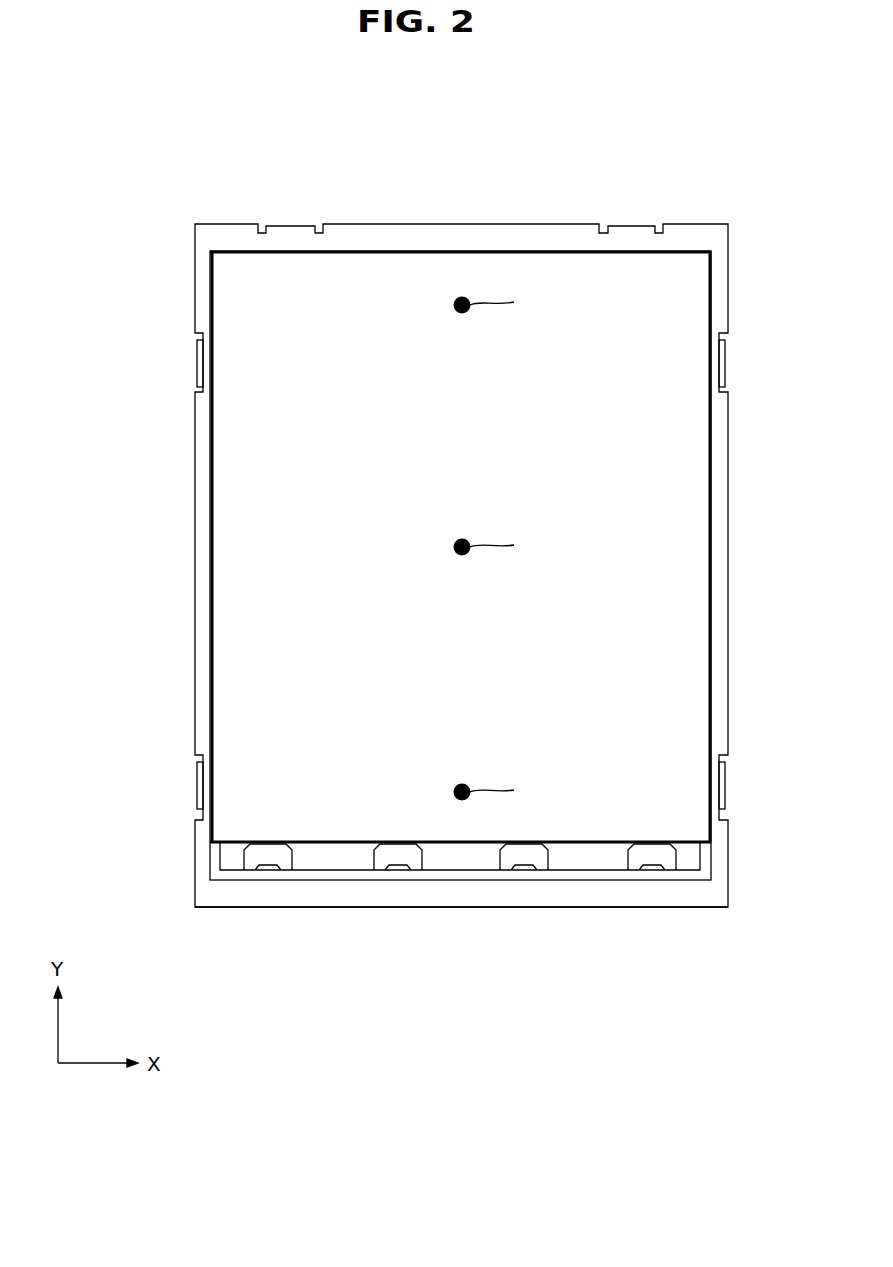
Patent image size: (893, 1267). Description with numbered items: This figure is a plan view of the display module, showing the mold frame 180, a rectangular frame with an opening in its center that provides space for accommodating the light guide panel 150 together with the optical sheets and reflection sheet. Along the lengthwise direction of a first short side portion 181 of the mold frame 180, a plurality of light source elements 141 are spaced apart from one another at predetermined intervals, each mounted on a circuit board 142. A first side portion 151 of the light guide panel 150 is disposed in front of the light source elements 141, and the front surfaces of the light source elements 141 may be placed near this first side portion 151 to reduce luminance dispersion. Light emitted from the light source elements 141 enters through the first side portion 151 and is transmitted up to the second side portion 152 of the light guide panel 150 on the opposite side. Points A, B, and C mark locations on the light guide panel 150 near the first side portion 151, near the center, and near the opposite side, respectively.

The mold frame 180 is at (188, 214).
The first short side portion 181 is at (637, 907).
The light guide panel 150 is at (660, 533).
The second side portion 152 is at (677, 250).
The first side portion 151 is at (655, 842).
The light source elements 141 is at (268, 850).
The circuit board 142 is at (287, 870).